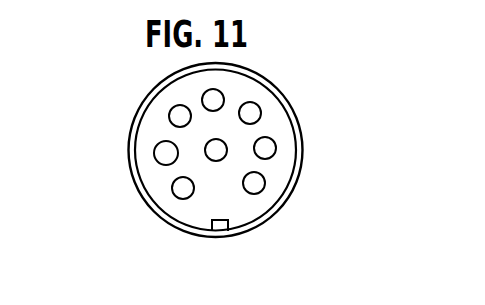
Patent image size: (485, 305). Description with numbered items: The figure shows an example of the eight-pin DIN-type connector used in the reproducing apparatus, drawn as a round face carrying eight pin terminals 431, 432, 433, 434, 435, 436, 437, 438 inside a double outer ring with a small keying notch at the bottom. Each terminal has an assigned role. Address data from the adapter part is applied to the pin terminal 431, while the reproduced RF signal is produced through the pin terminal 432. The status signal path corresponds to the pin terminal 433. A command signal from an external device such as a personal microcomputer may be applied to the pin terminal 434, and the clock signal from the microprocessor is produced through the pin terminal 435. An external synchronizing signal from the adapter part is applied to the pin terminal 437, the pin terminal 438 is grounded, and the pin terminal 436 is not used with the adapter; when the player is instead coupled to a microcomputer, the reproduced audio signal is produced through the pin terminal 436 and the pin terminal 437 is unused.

The pin terminal 431 is at (158, 162).
The pin terminal 432 is at (221, 93).
The pin terminal 433 is at (276, 150).
The pin terminal 434 is at (169, 111).
The pin terminal 435 is at (261, 113).
The pin terminal 436 is at (175, 194).
The pin terminal 437 is at (262, 190).
The pin terminal 438 is at (208, 142).